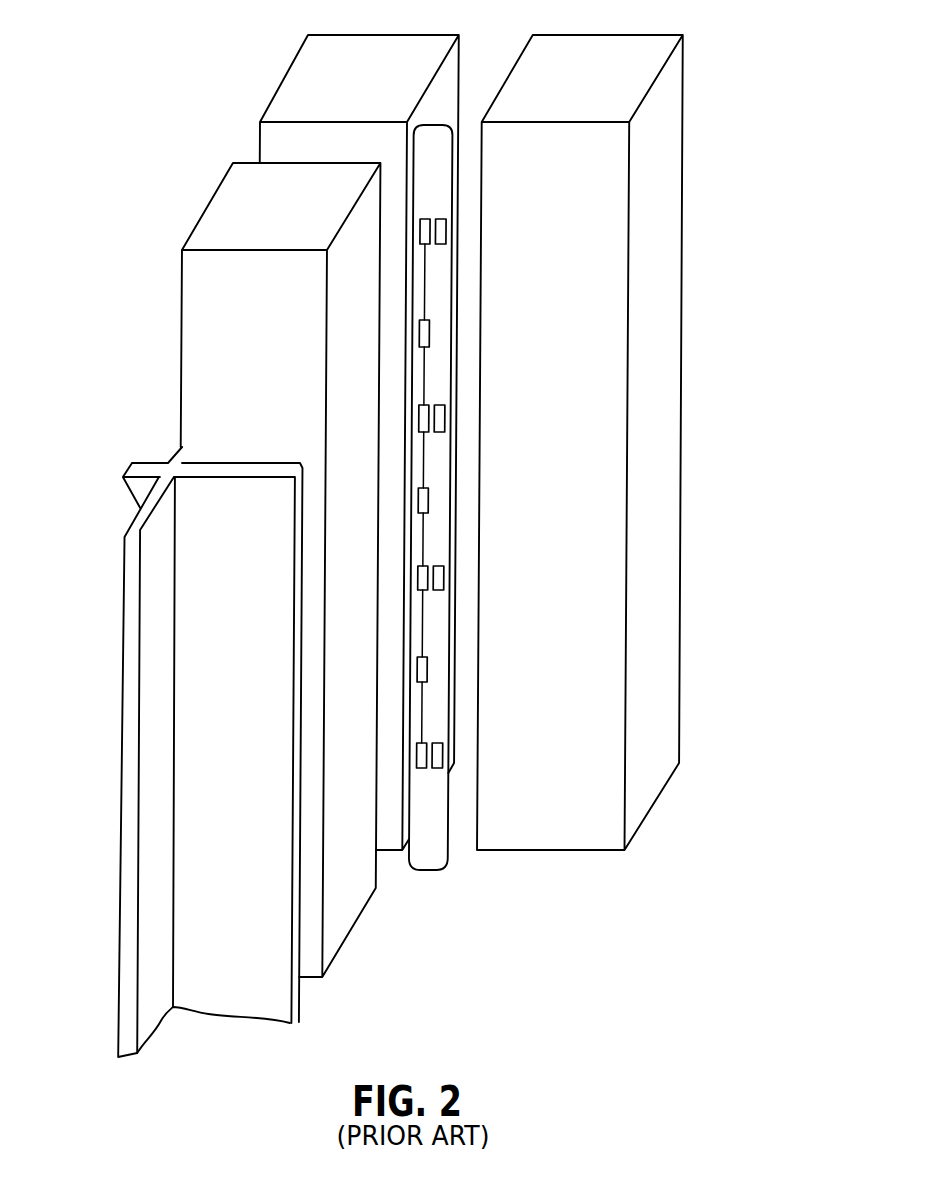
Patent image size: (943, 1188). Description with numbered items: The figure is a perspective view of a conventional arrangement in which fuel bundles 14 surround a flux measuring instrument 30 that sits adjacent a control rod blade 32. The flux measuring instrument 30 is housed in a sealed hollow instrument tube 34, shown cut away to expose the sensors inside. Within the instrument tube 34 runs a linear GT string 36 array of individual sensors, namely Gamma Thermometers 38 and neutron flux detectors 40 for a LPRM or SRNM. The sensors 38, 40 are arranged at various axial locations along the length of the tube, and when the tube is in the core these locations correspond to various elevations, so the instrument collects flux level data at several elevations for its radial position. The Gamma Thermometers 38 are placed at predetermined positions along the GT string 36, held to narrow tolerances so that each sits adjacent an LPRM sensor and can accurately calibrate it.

The fuel bundles 14 is at (292, 77).
The flux measuring instrument 30 is at (452, 540).
The control rod blade 32 is at (136, 462).
The instrument tube 34 is at (456, 512).
The GT string 36 is at (427, 628).
The Gamma Thermometers 38 is at (421, 238).
The neutron flux detectors 40 is at (449, 237).